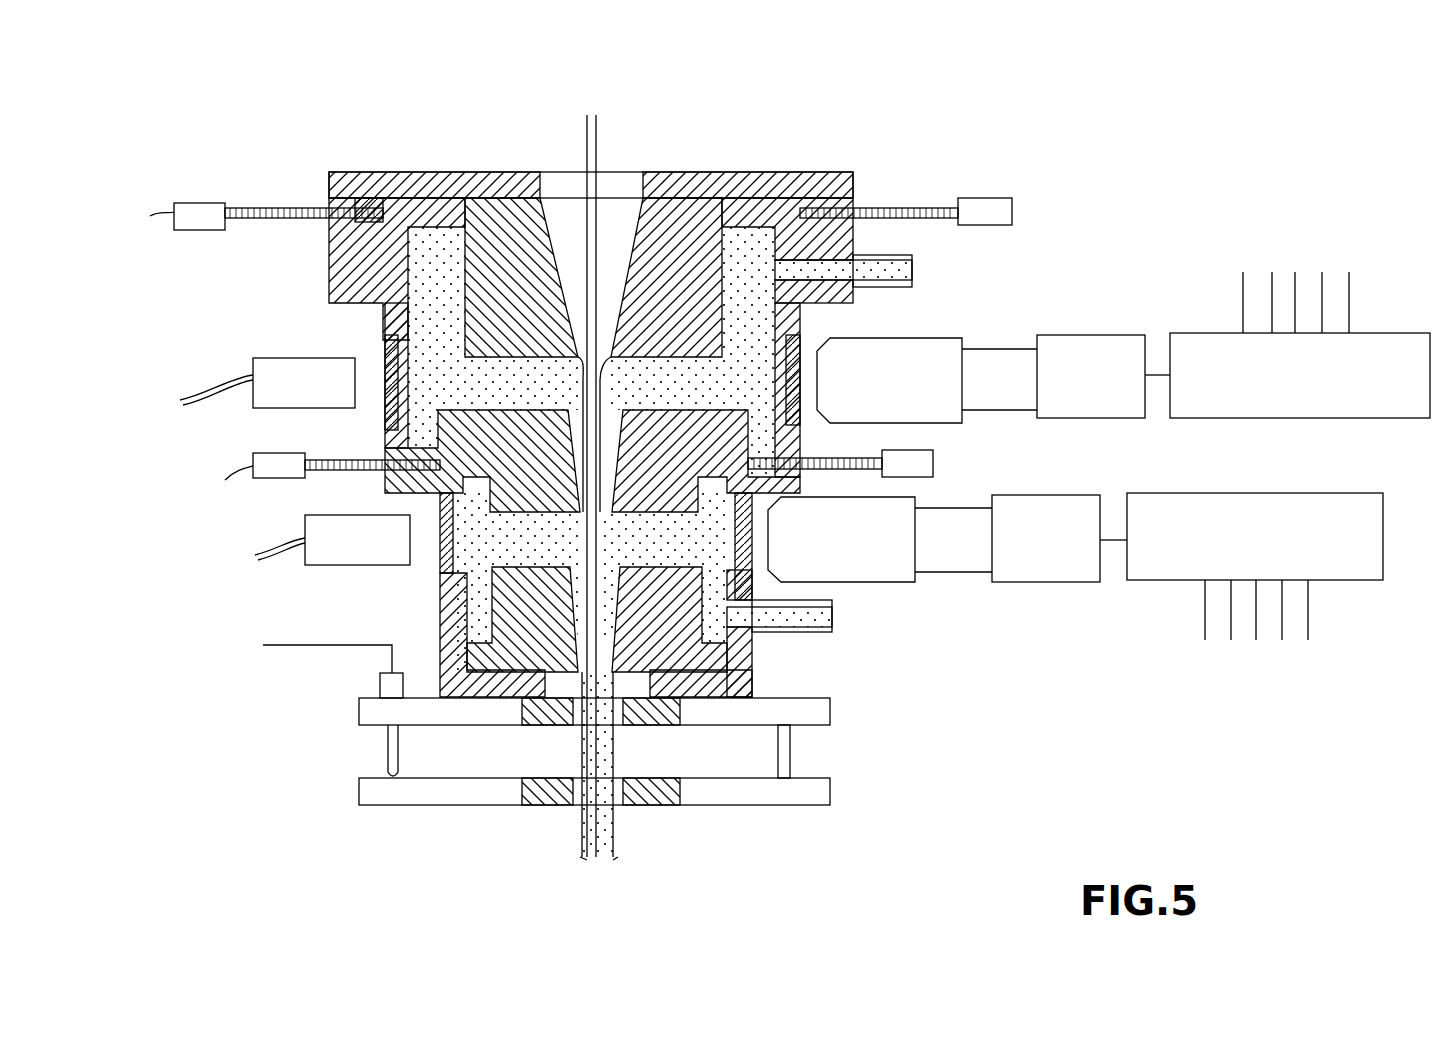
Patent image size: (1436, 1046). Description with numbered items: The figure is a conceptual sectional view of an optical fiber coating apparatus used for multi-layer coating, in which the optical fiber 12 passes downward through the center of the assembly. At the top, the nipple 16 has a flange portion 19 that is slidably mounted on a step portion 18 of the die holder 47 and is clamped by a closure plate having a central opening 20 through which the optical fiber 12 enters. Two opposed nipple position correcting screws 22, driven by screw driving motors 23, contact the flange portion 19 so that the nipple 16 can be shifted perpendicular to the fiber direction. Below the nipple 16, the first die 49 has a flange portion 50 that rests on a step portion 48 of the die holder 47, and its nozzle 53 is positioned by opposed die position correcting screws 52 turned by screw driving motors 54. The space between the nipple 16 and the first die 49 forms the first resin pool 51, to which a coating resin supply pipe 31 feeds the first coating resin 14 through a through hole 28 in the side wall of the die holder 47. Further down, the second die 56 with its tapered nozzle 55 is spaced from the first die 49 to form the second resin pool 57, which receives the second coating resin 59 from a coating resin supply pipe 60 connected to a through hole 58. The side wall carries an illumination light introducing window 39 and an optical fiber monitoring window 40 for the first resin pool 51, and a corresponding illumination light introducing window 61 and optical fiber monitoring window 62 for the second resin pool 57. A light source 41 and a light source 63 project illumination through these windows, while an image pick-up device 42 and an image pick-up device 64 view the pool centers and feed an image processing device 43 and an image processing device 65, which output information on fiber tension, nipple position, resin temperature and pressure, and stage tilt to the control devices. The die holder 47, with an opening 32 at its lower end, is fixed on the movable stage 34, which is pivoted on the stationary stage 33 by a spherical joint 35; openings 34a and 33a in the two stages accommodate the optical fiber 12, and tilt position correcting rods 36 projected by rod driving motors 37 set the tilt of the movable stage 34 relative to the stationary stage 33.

The optical fiber 12 is at (597, 135).
The first coating resin 14 is at (470, 245).
The nipple 16 is at (668, 285).
The step portion 18 is at (363, 215).
The flange portion 19 is at (430, 225).
The opening 20 is at (560, 180).
The nipple position correcting screws 22 is at (278, 208).
The screw driving motors 23 is at (200, 207).
The through hole 28 is at (792, 267).
The coating resin supply pipe 31 is at (888, 258).
The opening 32 is at (563, 690).
The stationary stage 33 is at (760, 790).
The opening 33a is at (577, 805).
The movable stage 34 is at (832, 714).
The opening 34a is at (620, 723).
The spherical joint 35 is at (800, 758).
The tilt position correcting rods 36 is at (388, 752).
The rod driving motors 37 is at (380, 683).
The illumination light introducing window 39 is at (390, 365).
The optical fiber monitoring window 40 is at (803, 357).
The light source 41 is at (265, 365).
The image pick-up device 42 is at (1012, 338).
The image processing device 43 is at (1337, 420).
The die holder 47 is at (335, 265).
The step portion 48 is at (392, 448).
The first die 49 is at (670, 463).
The flange portion 50 is at (733, 422).
The first resin pool 51 is at (497, 405).
The die position correcting screws 52 is at (322, 478).
The nozzle 53 is at (578, 432).
The screw driving motors 54 is at (263, 458).
The tapered nozzle 55 is at (572, 576).
The second die 56 is at (495, 628).
The second resin pool 57 is at (660, 560).
The through hole 58 is at (752, 668).
The second coating resin 59 is at (480, 637).
The coating resin supply pipe 60 is at (828, 632).
The illumination light introducing window 61 is at (442, 558).
The optical fiber monitoring window 62 is at (752, 572).
The light source 63 is at (320, 560).
The image pick-up device 64 is at (1045, 590).
The image processing device 65 is at (1335, 582).